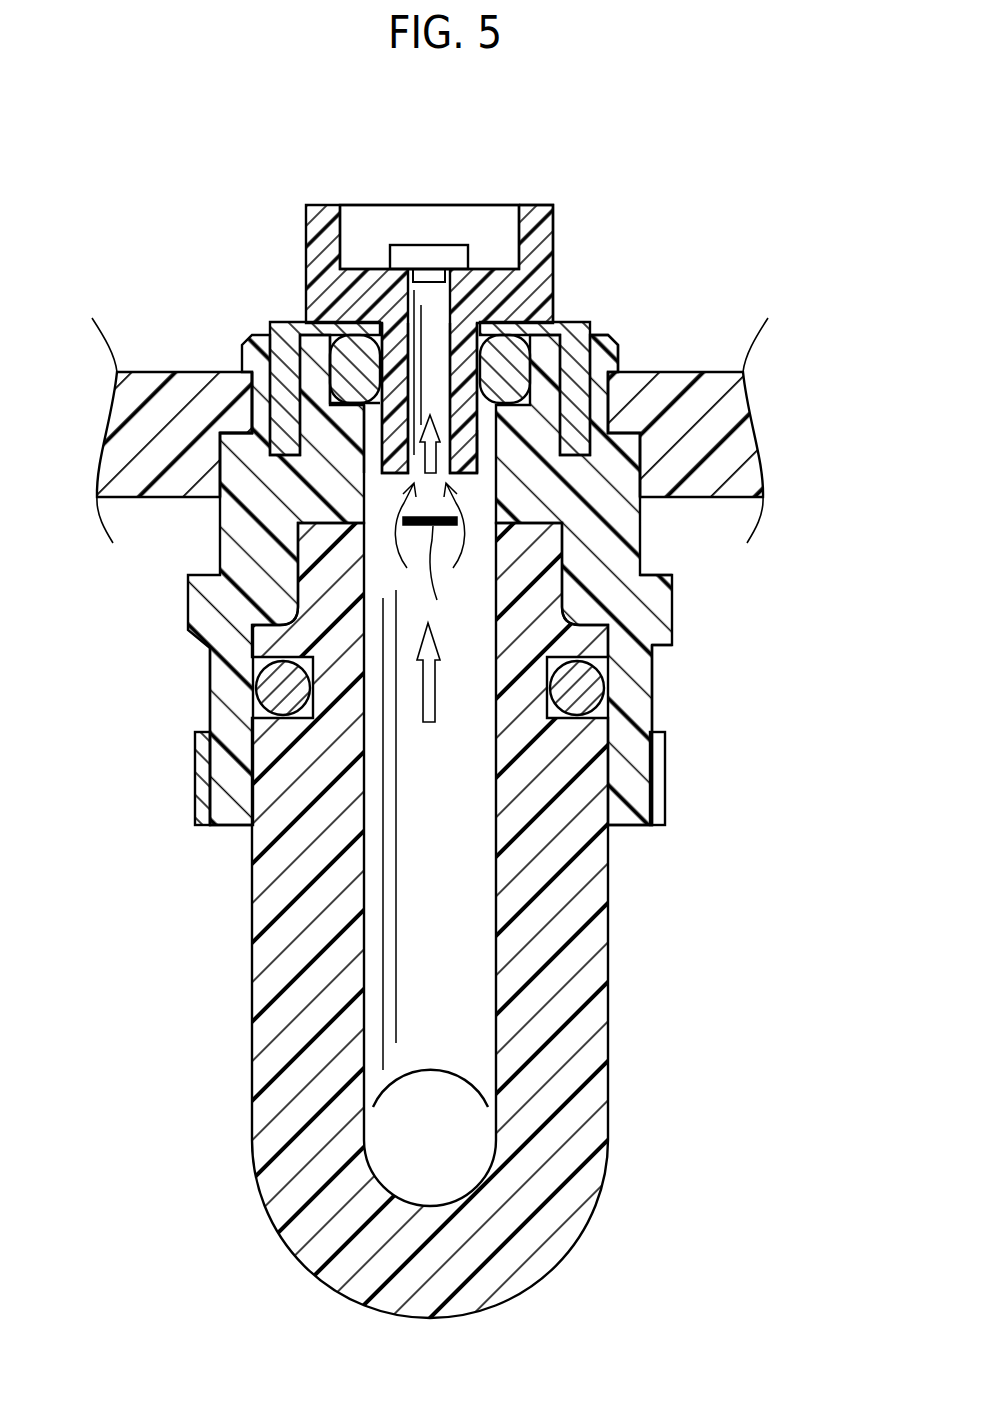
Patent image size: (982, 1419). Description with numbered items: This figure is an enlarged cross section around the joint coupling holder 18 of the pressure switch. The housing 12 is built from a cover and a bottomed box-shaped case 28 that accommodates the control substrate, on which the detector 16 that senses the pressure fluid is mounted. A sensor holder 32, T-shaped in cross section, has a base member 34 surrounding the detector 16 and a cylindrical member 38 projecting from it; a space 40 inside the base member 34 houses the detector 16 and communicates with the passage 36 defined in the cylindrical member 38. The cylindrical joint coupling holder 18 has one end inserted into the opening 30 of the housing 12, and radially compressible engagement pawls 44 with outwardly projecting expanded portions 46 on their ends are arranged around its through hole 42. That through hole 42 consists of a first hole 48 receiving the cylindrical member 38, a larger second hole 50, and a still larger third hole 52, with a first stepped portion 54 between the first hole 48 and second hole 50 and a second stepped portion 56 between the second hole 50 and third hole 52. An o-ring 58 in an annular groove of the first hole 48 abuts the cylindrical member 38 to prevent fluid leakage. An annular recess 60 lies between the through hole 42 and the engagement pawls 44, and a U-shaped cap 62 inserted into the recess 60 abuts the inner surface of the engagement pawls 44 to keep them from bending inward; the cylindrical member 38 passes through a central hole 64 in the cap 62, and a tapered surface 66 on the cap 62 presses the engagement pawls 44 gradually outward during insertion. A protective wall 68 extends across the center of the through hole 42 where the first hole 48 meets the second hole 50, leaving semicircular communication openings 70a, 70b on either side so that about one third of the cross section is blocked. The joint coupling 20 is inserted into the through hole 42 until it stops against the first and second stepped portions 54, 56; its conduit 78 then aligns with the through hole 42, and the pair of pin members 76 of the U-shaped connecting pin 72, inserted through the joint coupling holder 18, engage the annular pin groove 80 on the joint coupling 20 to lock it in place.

The housing 12 is at (712, 372).
The detector 16 is at (431, 243).
The joint coupling holder 18 is at (681, 627).
The joint coupling 20 is at (613, 1046).
The case 28 is at (140, 482).
The opening 30 is at (598, 388).
The sensor holder 32 is at (305, 232).
The base member 34 is at (545, 240).
The passage 36 is at (460, 335).
The cylindrical member 38 is at (382, 520).
The space 40 is at (403, 213).
The through hole 42 is at (486, 463).
The engagement pawls 44 is at (260, 410).
The expanded portions 46 is at (248, 355).
The first hole 48 is at (640, 433).
The second hole 50 is at (222, 615).
The third hole 52 is at (608, 790).
The first stepped portion 54 is at (655, 592).
The second stepped portion 56 is at (618, 648).
The o-ring 58 is at (340, 360).
The annular recess 60 is at (292, 450).
The cap 62 is at (597, 325).
The hole 64 is at (345, 358).
The tapered surface 66 is at (600, 462).
The protective wall 68 is at (440, 600).
The communication opening 70a is at (478, 520).
The communication opening 70b is at (393, 462).
The connecting pin 72 is at (603, 707).
The pin members 76 is at (285, 688).
The conduit 78 is at (485, 1003).
The pin groove 80 is at (258, 698).